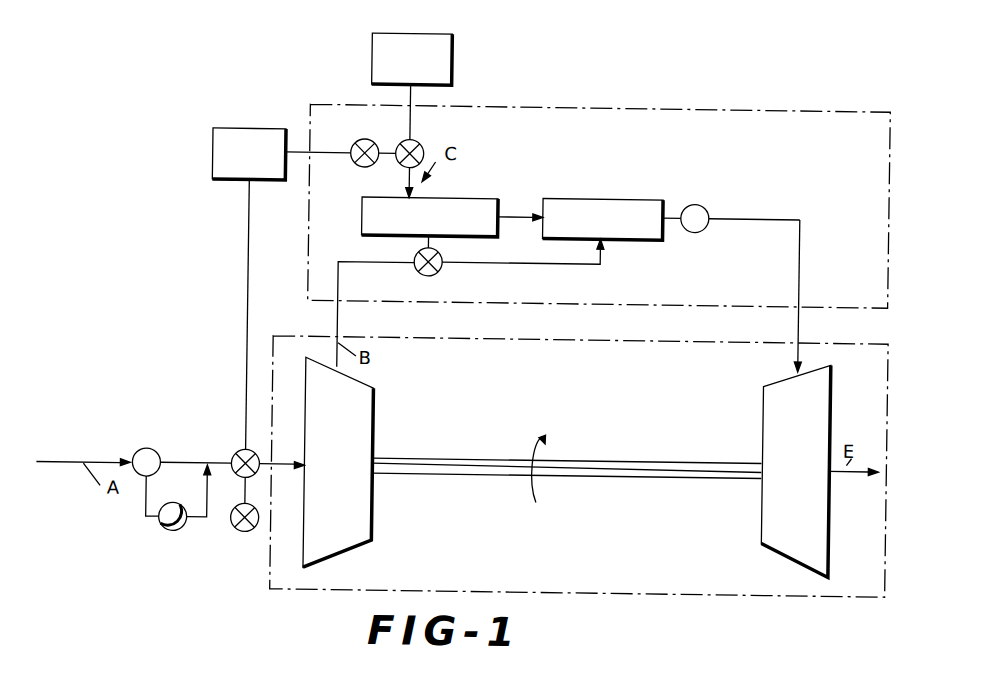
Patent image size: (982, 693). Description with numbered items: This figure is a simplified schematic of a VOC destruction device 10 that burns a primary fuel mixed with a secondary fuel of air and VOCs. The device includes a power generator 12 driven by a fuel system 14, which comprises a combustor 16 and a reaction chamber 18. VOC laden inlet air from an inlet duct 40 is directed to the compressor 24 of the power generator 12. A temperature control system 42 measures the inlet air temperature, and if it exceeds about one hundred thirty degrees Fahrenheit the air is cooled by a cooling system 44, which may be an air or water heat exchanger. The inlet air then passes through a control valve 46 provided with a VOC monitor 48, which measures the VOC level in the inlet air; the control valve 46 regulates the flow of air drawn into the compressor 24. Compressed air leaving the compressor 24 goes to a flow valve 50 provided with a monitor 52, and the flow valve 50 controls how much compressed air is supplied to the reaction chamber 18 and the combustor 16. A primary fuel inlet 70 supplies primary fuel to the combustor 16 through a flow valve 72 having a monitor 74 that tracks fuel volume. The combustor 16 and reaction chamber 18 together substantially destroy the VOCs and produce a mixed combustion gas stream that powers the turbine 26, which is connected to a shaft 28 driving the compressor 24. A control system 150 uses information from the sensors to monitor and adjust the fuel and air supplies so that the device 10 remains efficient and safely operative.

The VOC destruction device 10 is at (585, 358).
The power generator 12 is at (845, 338).
The fuel system 14 is at (850, 108).
The combustor 16 is at (478, 200).
The reaction chamber 18 is at (618, 199).
The compressor 24 is at (374, 523).
The turbine 26 is at (818, 532).
The shaft 28 is at (652, 462).
The inlet duct 40 is at (74, 484).
The temperature control system 42 is at (148, 454).
The cooling system 44 is at (162, 533).
The control valve 46 is at (246, 453).
The VOC monitor 48 is at (247, 536).
The flow valve 50 is at (416, 274).
The monitor 52 is at (695, 203).
The primary fuel inlet 70 is at (415, 19).
The flow valve 72 is at (395, 143).
The monitor 74 is at (349, 143).
The control system 150 is at (241, 133).